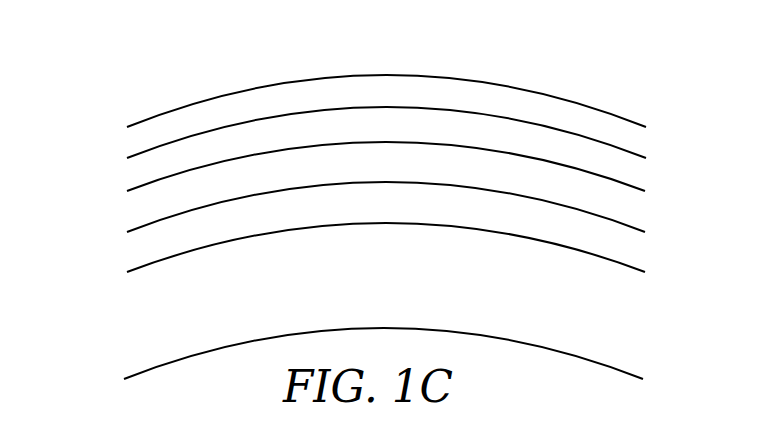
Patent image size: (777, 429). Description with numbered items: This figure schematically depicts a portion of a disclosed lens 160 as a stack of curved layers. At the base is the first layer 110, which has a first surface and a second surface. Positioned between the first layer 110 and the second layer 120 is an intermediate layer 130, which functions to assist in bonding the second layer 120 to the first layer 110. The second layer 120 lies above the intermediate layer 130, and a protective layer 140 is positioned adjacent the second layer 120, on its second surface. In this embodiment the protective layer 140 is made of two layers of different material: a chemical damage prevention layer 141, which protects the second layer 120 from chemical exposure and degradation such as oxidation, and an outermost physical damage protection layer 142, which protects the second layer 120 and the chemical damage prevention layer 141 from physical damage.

The lens 160 is at (578, 64).
The protective layer 140 is at (113, 125).
The physical damage protection layer 142 is at (363, 100).
The chemical damage prevention layer 141 is at (363, 132).
The second layer 120 is at (363, 167).
The intermediate layer 130 is at (362, 213).
The first layer 110 is at (362, 271).